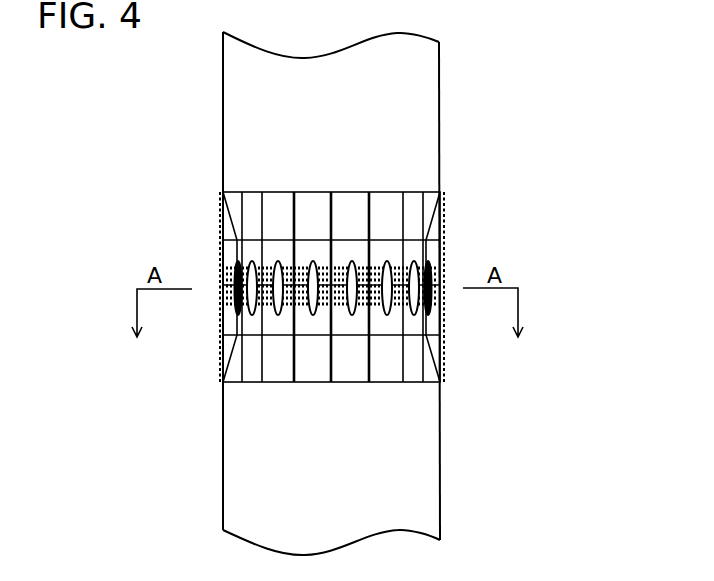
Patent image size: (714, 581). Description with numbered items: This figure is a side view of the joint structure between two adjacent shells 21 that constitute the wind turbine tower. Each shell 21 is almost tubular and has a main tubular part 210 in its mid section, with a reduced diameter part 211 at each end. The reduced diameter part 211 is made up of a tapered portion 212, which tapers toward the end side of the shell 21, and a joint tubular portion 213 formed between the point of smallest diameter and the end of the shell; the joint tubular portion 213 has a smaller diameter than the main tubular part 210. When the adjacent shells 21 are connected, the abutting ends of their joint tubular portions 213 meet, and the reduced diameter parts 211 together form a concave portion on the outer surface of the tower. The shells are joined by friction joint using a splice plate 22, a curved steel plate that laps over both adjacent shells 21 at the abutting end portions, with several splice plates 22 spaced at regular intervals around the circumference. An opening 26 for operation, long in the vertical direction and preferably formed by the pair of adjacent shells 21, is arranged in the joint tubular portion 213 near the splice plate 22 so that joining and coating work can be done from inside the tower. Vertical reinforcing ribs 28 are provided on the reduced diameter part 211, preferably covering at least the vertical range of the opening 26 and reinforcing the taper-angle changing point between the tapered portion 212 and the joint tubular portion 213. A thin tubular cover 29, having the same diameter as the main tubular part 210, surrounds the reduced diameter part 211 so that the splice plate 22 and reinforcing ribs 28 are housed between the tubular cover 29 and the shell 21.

The shell 21 is at (436, 72).
The main tubular part 210 is at (425, 132).
The reduced diameter part 211 is at (549, 189).
The tapered portion 212 is at (437, 205).
The joint tubular portion 213 is at (428, 250).
The reinforcing rib 28 is at (229, 238).
The tubular cover 29 is at (222, 192).
The opening for operation 26 is at (278, 297).
The splice plate 22 is at (305, 298).